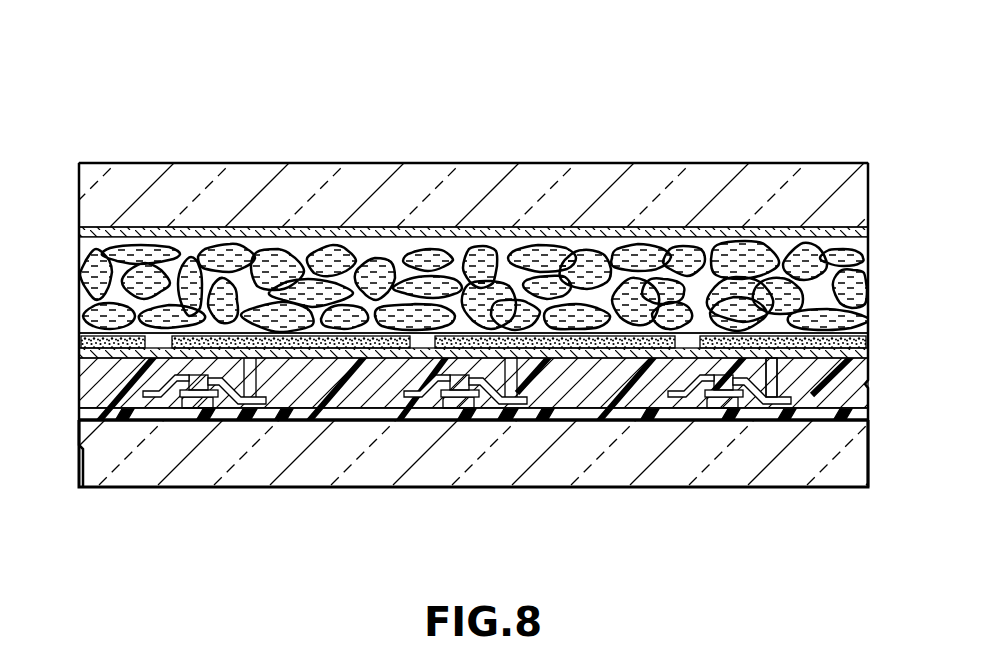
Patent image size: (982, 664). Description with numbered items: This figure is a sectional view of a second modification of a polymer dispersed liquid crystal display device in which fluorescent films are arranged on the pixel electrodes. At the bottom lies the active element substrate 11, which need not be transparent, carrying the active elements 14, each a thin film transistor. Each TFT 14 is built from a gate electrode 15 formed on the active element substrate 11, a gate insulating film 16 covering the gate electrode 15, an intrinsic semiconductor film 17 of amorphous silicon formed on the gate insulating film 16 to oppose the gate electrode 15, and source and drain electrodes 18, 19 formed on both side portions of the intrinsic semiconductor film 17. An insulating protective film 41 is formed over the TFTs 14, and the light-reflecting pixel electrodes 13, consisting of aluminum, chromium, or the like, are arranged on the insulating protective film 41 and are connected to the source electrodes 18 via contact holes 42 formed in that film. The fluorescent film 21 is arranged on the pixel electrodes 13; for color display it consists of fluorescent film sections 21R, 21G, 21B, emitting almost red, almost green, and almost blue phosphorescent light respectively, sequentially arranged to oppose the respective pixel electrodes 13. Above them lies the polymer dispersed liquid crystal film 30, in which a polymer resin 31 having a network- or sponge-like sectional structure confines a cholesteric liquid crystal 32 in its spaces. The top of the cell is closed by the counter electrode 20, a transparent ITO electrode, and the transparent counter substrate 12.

The active element substrate 11 is at (784, 462).
The counter substrate 12 is at (778, 185).
The pixel electrodes 13 is at (393, 358).
The active element 14 is at (463, 465).
The gate electrode 15 is at (208, 460).
The gate insulating film 16 is at (235, 453).
The intrinsic semiconductor film 17 is at (171, 462).
The source electrode 18 is at (262, 474).
The drain electrode 19 is at (183, 470).
The counter electrode 20 is at (695, 228).
The fluorescent film 21 is at (415, 56).
The fluorescent film section 21R is at (403, 346).
The fluorescent film section 21G is at (609, 346).
The fluorescent film section 21B is at (698, 346).
The polymer dispersed liquid crystal film 30 is at (78, 302).
The polymer resin 31 is at (474, 212).
The cholesteric liquid crystal 32 is at (478, 264).
The insulating protective film 41 is at (598, 395).
The contact holes 42 is at (777, 370).